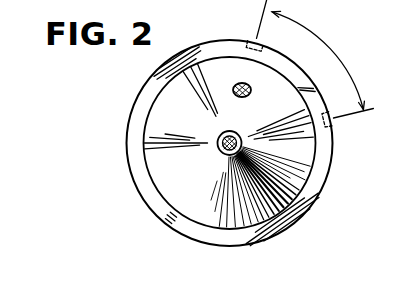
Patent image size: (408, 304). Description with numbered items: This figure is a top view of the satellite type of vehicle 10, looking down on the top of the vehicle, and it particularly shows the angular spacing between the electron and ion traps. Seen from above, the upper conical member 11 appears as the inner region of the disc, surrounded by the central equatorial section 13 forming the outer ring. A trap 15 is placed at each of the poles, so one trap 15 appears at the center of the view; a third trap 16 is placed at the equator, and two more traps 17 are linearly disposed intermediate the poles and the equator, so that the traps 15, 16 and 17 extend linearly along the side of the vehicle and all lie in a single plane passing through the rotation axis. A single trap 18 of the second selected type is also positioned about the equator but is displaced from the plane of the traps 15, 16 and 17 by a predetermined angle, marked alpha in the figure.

The satellite type of vehicle 10 is at (112, 143).
The upper conical member 11 is at (191, 190).
The central equatorial section 13 is at (135, 178).
The trap 15 is at (234, 132).
The third trap 16 is at (251, 42).
The traps 17 is at (247, 88).
The single trap 18 is at (331, 120).